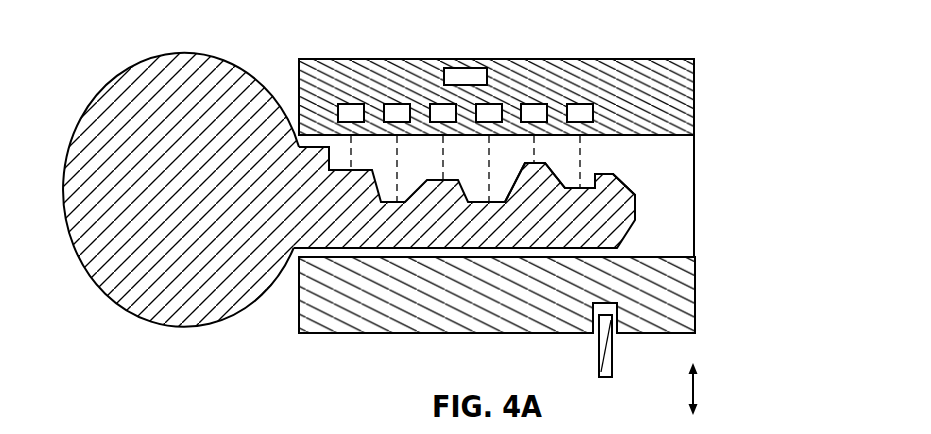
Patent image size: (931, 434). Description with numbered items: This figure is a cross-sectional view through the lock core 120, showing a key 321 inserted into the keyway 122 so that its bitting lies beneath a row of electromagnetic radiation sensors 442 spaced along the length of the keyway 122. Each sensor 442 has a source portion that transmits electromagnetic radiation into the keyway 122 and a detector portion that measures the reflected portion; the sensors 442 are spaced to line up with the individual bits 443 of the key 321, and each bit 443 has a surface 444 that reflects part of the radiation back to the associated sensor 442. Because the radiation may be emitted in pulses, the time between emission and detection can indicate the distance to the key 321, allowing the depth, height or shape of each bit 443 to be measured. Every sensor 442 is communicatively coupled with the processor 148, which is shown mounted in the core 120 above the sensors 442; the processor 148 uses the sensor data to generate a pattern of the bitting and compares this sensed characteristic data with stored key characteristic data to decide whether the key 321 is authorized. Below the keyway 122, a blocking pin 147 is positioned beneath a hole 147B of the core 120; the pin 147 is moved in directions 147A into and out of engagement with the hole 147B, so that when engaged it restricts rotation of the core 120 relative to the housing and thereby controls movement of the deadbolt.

The key 321 is at (118, 293).
The bit 443 is at (610, 226).
The surface 444 is at (590, 201).
The core 120 is at (694, 86).
The electromagnetic radiation sensor 442 is at (441, 102).
The processor 148 is at (447, 67).
The keyway 122 is at (688, 247).
The hole 147B is at (623, 322).
The pin 147 is at (613, 358).
The directions 147A is at (694, 389).